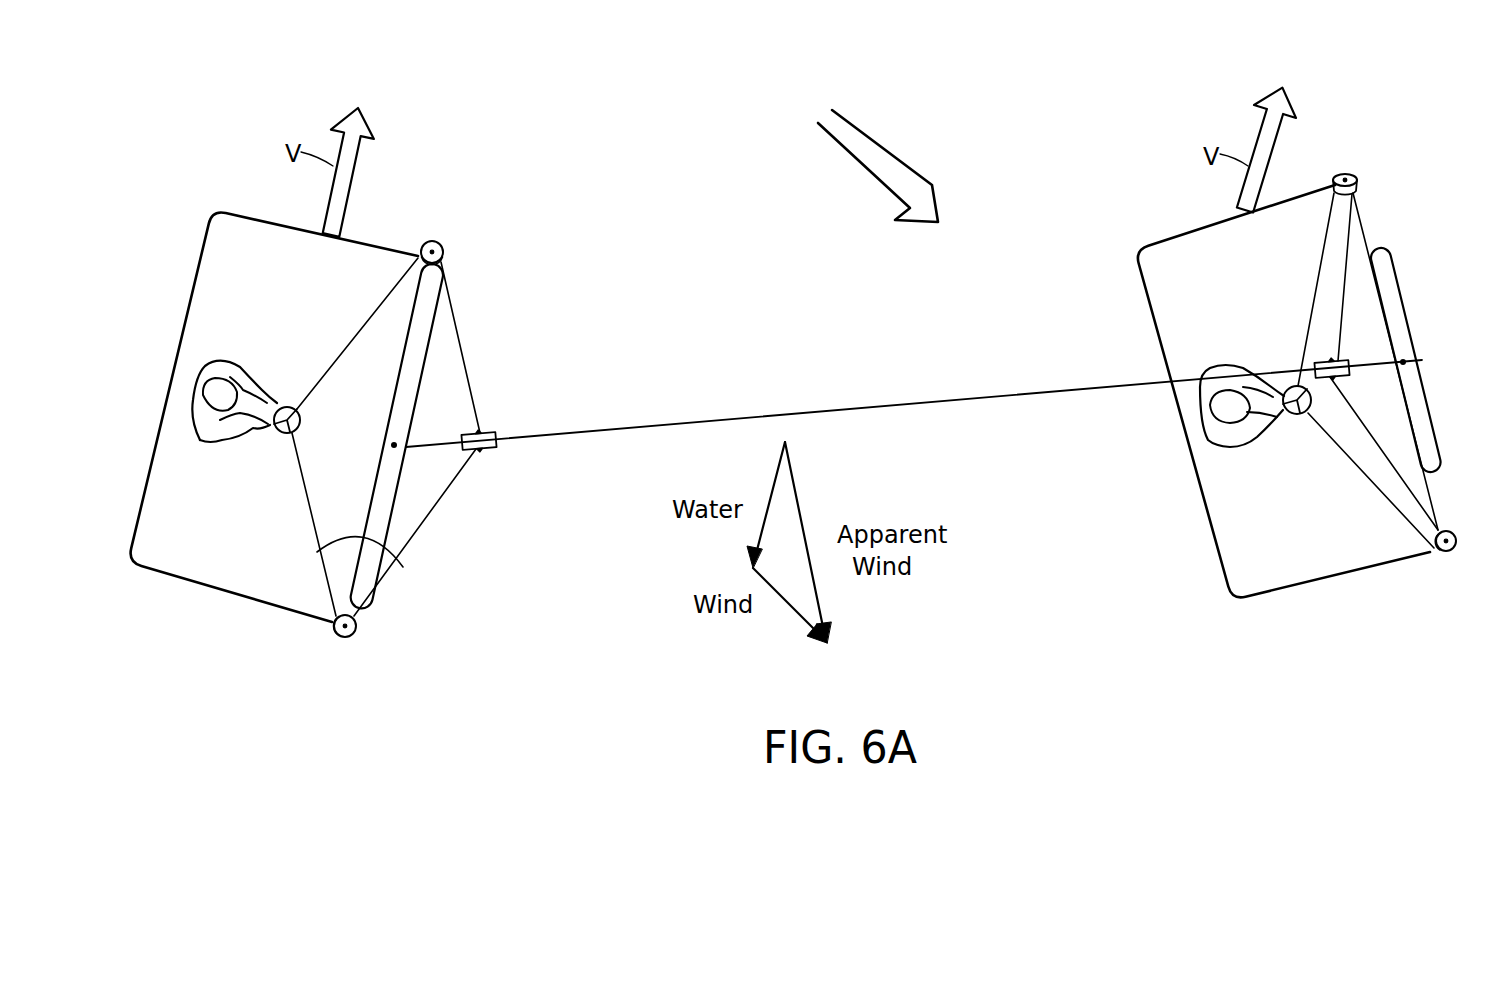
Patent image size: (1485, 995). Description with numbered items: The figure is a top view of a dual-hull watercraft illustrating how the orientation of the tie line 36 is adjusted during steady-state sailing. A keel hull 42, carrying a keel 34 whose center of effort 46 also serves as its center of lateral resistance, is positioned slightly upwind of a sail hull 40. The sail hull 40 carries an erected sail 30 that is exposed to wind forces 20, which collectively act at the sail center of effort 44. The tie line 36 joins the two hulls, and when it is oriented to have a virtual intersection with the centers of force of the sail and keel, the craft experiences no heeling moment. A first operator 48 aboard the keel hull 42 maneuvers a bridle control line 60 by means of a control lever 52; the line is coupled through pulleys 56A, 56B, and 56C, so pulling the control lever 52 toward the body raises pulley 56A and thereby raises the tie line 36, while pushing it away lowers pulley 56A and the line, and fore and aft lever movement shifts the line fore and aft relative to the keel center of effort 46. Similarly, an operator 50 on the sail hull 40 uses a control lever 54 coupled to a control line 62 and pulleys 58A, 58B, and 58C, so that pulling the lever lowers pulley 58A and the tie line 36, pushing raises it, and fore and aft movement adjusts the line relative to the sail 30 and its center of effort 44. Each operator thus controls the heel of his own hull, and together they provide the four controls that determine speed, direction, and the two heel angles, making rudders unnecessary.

The wind forces 20 is at (885, 157).
The sail 30 is at (1395, 283).
The keel 34 is at (427, 323).
The tie line 36 is at (695, 423).
The sail hull 40 is at (1282, 263).
The keel hull 42 is at (275, 297).
The sail center of effort 44 is at (1405, 361).
The keel center of effort 46 is at (394, 445).
The first operator 48 is at (200, 441).
The operator 50 is at (1230, 448).
The control lever 52 is at (280, 437).
The control lever 54 is at (1298, 415).
The pulley 56A is at (490, 452).
The pulley 56B is at (440, 243).
The pulley 56C is at (352, 636).
The pulley 58A is at (1328, 362).
The pulley 58B is at (1352, 172).
The pulley 58C is at (1446, 552).
The bridle control line 60 is at (403, 567).
The control line 62 is at (1397, 463).